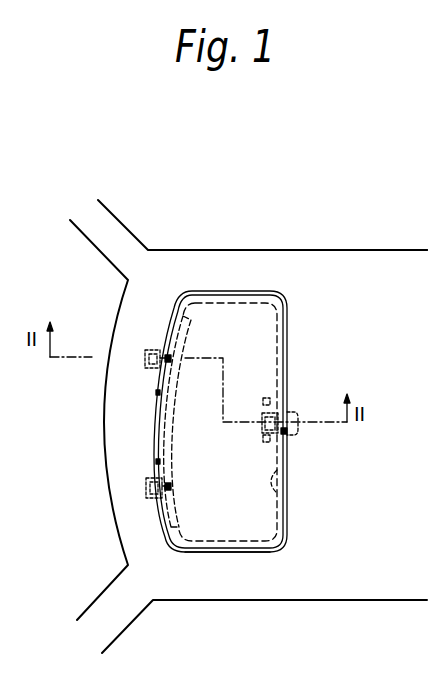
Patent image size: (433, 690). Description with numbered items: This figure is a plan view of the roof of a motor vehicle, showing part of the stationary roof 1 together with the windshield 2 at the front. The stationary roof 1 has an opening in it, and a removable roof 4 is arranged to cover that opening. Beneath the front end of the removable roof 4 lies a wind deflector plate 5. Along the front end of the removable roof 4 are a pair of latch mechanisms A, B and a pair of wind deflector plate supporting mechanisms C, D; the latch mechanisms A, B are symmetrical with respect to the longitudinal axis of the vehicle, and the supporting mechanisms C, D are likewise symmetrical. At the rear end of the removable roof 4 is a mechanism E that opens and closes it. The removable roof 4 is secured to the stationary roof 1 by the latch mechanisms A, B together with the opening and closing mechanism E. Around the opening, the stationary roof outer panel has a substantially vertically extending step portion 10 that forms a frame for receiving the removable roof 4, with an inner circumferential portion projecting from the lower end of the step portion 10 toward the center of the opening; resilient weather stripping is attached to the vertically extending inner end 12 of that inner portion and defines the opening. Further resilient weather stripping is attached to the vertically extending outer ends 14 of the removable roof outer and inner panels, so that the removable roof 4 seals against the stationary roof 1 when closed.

The stationary roof 1 is at (373, 280).
The windshield 2 is at (83, 436).
The removable roof 4 is at (245, 313).
The wind deflector plate 5 is at (165, 422).
The step portion 10 is at (213, 552).
The inner end 12 is at (287, 478).
The outer ends 14 is at (240, 546).
The latch mechanism A is at (143, 343).
The latch mechanism B is at (149, 499).
The wind deflector plate supporting mechanism C is at (156, 392).
The wind deflector plate supporting mechanism D is at (156, 461).
The opening and closing mechanism E is at (301, 427).